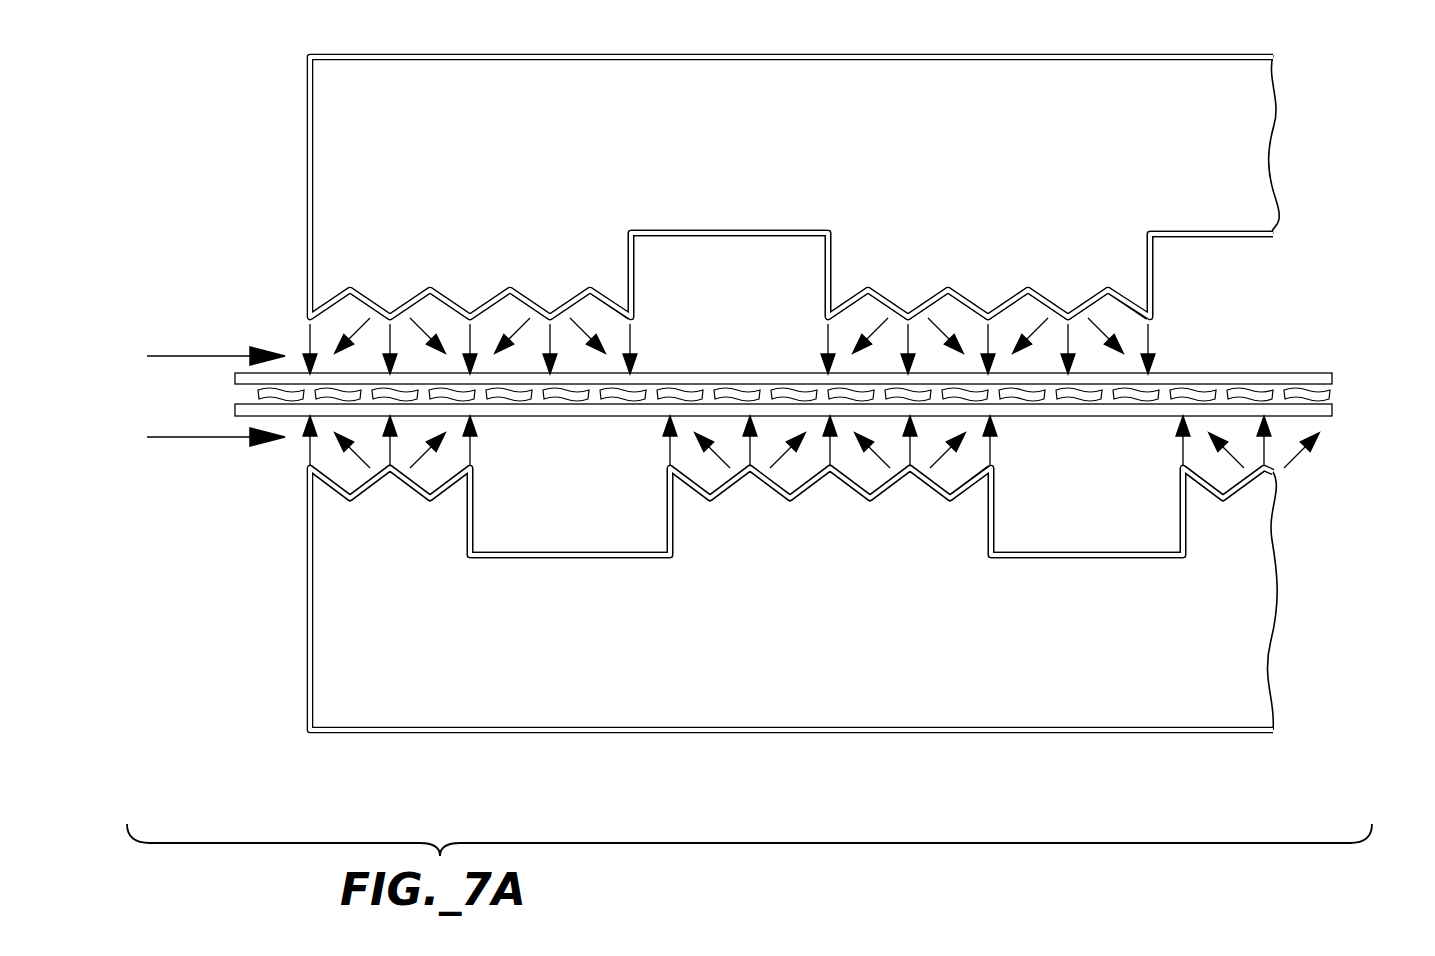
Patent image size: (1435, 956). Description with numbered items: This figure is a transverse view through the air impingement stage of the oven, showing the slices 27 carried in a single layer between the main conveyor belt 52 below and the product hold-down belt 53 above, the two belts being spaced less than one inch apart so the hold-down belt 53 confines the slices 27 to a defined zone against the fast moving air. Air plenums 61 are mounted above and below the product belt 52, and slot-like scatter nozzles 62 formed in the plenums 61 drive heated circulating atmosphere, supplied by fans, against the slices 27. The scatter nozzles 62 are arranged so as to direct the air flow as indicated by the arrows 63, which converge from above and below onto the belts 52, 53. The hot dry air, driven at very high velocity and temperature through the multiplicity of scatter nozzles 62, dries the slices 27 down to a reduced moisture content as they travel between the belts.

The air plenum 61 is at (388, 80).
The scatter nozzle 62 is at (470, 314).
The arrows indicating air flow 63 is at (1150, 343).
The product hold-down belt 53 is at (1336, 372).
The main conveyor belt 52 is at (1336, 417).
The slice 27 is at (257, 397).